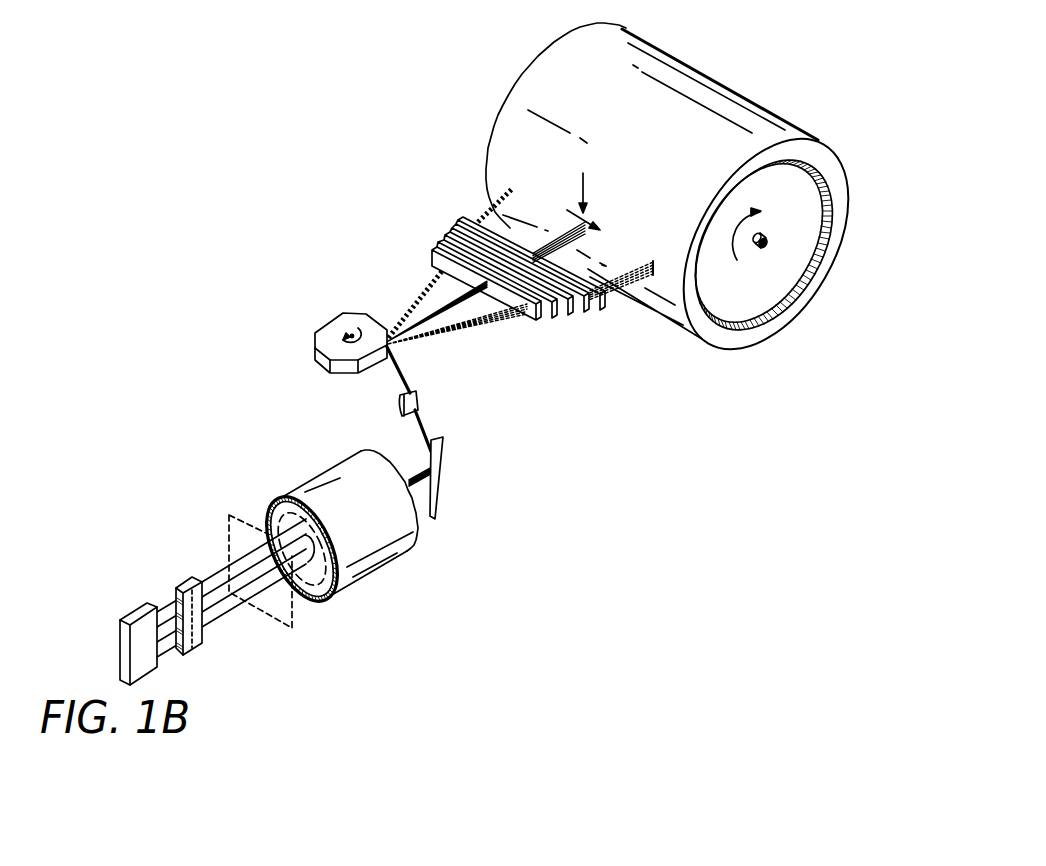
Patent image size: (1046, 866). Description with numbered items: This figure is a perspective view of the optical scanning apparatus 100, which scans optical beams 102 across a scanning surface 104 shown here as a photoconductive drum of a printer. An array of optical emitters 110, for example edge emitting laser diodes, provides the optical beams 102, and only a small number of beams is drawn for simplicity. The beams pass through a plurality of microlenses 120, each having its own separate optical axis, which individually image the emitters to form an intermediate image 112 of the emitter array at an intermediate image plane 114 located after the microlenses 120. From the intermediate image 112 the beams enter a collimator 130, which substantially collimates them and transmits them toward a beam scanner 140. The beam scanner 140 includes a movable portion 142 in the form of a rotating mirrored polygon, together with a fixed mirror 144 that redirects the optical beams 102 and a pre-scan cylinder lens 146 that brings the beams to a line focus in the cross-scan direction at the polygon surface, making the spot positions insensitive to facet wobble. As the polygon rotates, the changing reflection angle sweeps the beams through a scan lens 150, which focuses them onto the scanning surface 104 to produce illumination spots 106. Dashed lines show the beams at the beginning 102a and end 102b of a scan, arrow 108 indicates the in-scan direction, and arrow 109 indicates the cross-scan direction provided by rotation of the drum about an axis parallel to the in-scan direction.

The optical scanning apparatus 100 is at (218, 135).
The optical beams 102 is at (448, 292).
The optical beams at a beginning of a scan 102a is at (481, 212).
The optical beams at an end of a scan 102b is at (622, 304).
The scanning surface 104 is at (490, 180).
The illumination spots 106 is at (562, 228).
The in-scan direction arrow 108 is at (603, 224).
The cross-scan direction arrow 109 is at (588, 185).
The array of optical emitters 110 is at (121, 618).
The intermediate image 112 is at (255, 604).
The intermediate image plane 114 is at (293, 614).
The plurality of microlenses 120 is at (176, 588).
The collimator 130 is at (320, 478).
The beam scanner 140 is at (303, 329).
The movable portion 142 is at (316, 336).
The fixed mirror 144 is at (443, 481).
The pre-scan cylinder lens 146 is at (398, 405).
The scan lens 150 is at (522, 272).